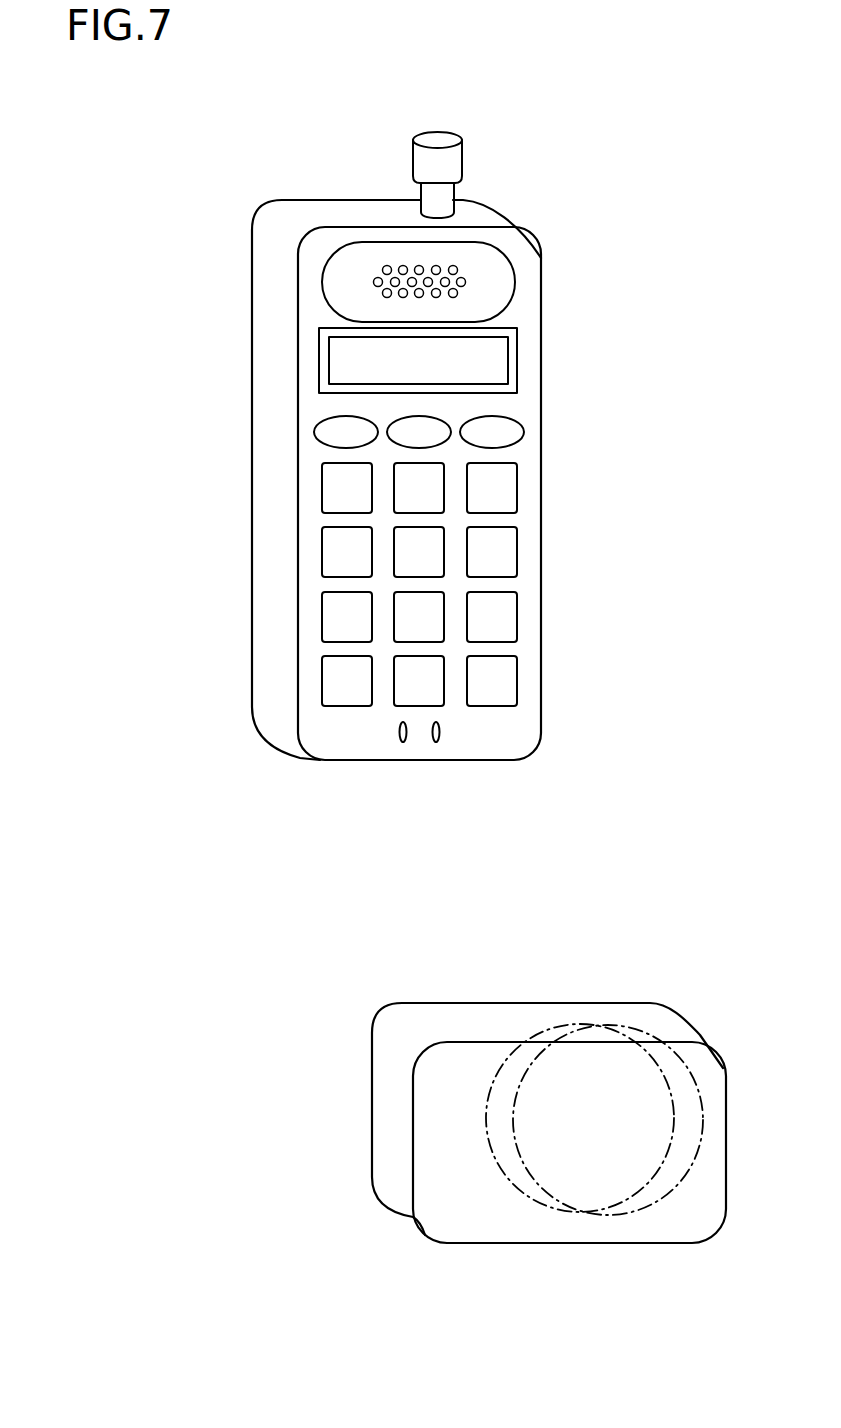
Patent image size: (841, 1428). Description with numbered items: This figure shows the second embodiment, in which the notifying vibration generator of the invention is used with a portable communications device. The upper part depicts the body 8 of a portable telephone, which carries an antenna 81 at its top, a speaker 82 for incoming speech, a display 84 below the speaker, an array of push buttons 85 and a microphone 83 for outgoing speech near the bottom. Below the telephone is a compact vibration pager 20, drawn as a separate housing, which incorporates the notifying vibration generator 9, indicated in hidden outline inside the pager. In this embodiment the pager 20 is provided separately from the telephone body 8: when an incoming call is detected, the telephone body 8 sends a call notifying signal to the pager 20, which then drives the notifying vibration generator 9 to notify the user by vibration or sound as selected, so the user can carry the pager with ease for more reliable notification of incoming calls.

The body of a portable telephone 8 is at (275, 275).
The antenna 81 is at (433, 142).
The speaker 82 is at (497, 290).
The microphone 83 is at (397, 743).
The display 84 is at (357, 362).
The push buttons 85 is at (425, 545).
The compact vibration pager 20 is at (483, 1022).
The notifying vibration generator 9 is at (530, 1178).